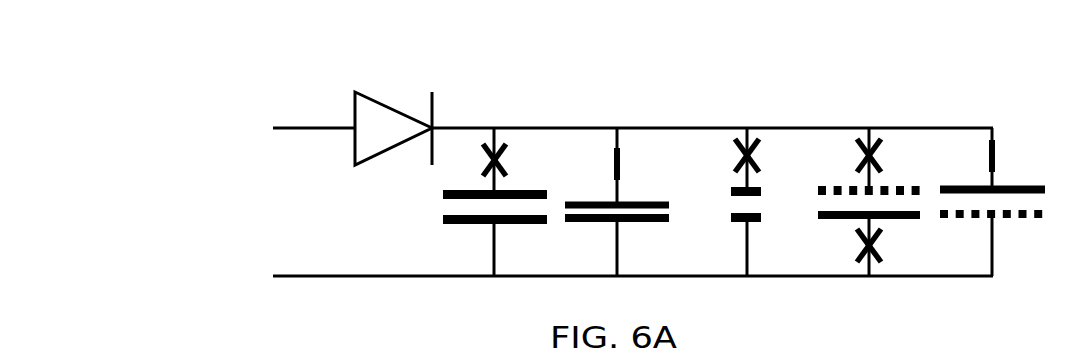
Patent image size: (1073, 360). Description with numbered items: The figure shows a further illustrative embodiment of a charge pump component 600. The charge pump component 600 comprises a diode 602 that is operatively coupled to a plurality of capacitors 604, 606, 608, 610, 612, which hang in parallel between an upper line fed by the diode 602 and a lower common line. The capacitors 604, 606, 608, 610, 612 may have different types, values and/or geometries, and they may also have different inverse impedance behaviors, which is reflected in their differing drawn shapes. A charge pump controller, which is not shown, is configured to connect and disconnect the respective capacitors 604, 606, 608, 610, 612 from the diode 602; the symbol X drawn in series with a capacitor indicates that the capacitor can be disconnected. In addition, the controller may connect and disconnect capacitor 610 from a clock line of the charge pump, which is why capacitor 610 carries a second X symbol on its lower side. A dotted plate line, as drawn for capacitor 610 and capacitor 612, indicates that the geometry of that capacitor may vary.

The charge pump component 600 is at (238, 159).
The diode 602 is at (390, 107).
The capacitor 604 is at (519, 190).
The capacitor 606 is at (638, 200).
The capacitor 608 is at (762, 188).
The capacitor 610 is at (885, 187).
The capacitor 612 is at (1004, 183).